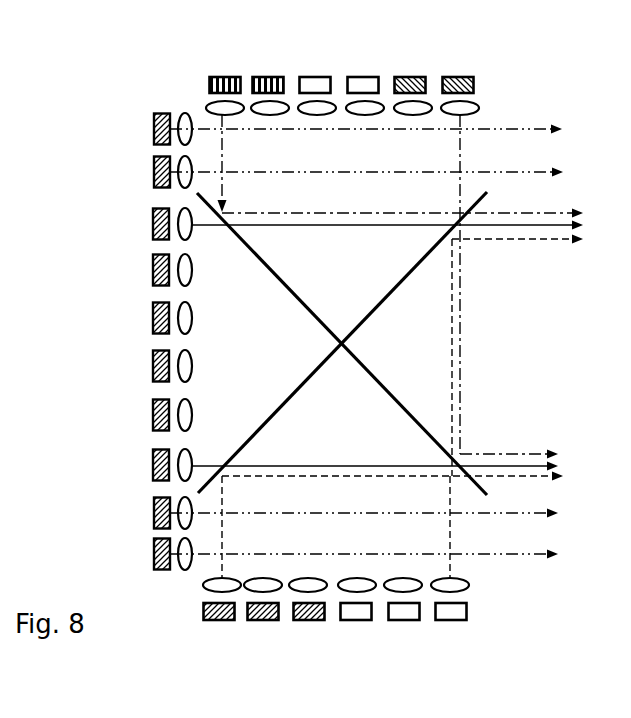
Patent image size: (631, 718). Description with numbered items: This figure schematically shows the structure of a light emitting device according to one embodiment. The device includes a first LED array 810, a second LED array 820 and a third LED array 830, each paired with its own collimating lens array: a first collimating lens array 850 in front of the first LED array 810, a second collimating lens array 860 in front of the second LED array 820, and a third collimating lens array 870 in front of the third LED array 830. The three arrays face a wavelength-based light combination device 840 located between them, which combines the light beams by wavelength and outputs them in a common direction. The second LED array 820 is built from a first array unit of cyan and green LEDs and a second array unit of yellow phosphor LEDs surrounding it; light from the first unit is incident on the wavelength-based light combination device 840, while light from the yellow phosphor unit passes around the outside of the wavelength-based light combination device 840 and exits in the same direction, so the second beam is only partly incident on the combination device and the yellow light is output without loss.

The first LED array 810 is at (468, 625).
The second LED array 820 is at (140, 113).
The third LED array 830 is at (475, 68).
The wavelength-based light combination device 840 is at (435, 442).
The first collimating lens array 850 is at (470, 586).
The second collimating lens array 860 is at (186, 570).
The third collimating lens array 870 is at (477, 104).